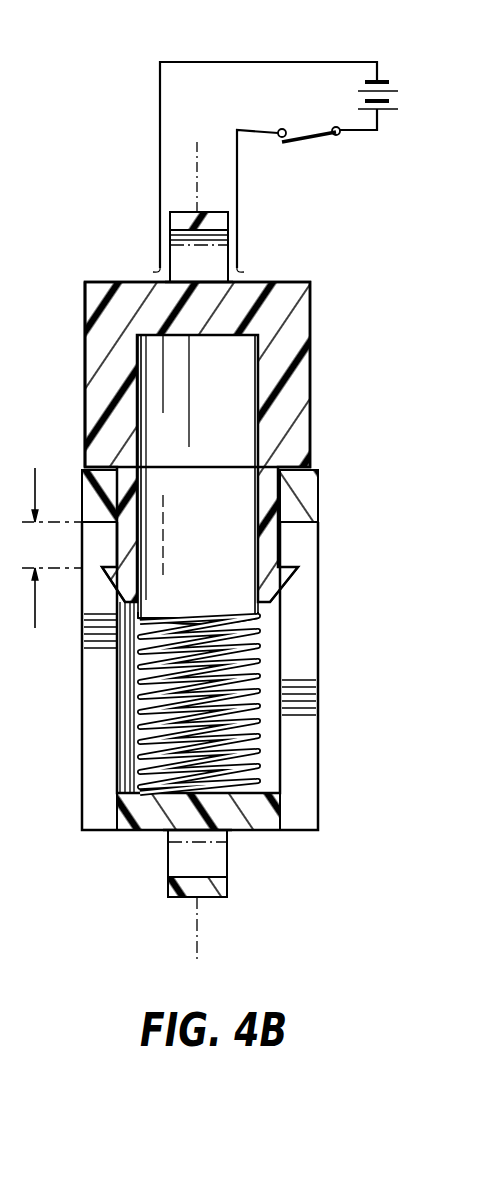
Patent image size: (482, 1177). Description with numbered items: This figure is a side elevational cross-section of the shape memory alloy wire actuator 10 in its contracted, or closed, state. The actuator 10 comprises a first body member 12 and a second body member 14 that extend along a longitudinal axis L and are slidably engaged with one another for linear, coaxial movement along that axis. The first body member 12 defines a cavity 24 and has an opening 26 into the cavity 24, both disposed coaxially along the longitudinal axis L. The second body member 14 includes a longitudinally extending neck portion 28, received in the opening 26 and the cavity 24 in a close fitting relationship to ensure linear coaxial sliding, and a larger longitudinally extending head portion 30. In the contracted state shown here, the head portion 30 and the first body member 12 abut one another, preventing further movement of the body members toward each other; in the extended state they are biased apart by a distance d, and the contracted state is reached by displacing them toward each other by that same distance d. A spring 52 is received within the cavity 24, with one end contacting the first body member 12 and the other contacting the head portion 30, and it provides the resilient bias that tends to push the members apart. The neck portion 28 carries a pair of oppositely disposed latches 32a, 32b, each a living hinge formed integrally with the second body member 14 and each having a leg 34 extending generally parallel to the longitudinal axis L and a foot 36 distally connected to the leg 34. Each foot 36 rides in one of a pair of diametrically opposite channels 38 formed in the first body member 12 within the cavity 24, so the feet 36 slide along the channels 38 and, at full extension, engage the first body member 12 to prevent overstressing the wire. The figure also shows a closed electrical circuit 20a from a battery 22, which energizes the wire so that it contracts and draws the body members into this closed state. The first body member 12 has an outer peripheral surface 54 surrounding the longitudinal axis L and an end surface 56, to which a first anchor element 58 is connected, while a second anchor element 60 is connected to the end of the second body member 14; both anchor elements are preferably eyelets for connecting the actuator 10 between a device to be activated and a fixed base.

The shape memory alloy wire actuator 10 is at (104, 238).
The first body member 12 is at (305, 752).
The second body member 14 is at (326, 343).
The closed electrical circuit 20a is at (211, 62).
The battery 22 is at (358, 91).
The cavity 24 is at (124, 678).
The opening 26 is at (318, 477).
The neck portion 28 is at (212, 608).
The head portion 30 is at (300, 440).
The latch 32a is at (135, 547).
The latch 32b is at (265, 520).
The leg 34 is at (138, 497).
The foot 36 is at (102, 581).
The channel 38 is at (298, 640).
The spring 52 is at (265, 697).
The outer peripheral surface 54 is at (83, 432).
The end surface 56 is at (272, 282).
The first anchor element 58 is at (168, 877).
The second anchor element 60 is at (225, 221).
The distance d is at (52, 548).
The longitudinal axis L is at (199, 945).